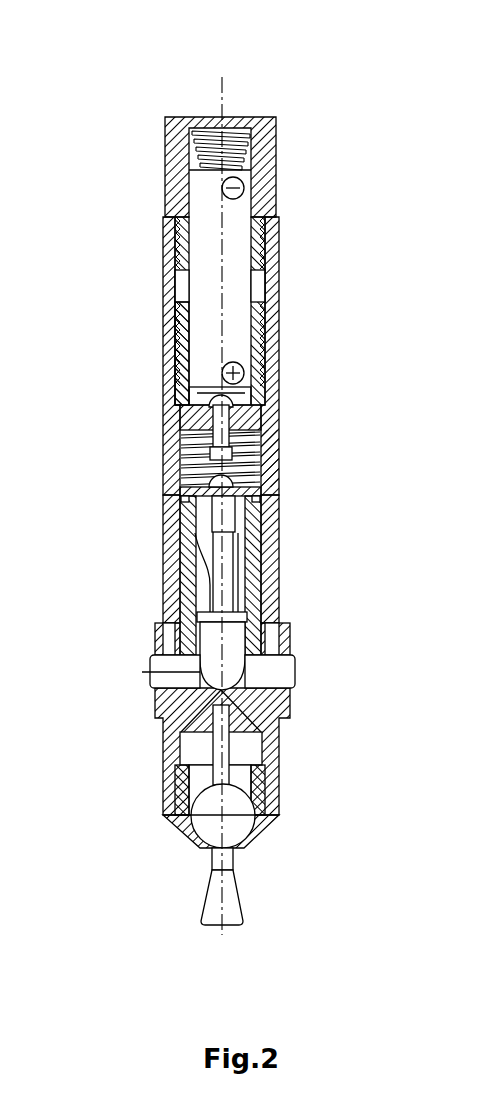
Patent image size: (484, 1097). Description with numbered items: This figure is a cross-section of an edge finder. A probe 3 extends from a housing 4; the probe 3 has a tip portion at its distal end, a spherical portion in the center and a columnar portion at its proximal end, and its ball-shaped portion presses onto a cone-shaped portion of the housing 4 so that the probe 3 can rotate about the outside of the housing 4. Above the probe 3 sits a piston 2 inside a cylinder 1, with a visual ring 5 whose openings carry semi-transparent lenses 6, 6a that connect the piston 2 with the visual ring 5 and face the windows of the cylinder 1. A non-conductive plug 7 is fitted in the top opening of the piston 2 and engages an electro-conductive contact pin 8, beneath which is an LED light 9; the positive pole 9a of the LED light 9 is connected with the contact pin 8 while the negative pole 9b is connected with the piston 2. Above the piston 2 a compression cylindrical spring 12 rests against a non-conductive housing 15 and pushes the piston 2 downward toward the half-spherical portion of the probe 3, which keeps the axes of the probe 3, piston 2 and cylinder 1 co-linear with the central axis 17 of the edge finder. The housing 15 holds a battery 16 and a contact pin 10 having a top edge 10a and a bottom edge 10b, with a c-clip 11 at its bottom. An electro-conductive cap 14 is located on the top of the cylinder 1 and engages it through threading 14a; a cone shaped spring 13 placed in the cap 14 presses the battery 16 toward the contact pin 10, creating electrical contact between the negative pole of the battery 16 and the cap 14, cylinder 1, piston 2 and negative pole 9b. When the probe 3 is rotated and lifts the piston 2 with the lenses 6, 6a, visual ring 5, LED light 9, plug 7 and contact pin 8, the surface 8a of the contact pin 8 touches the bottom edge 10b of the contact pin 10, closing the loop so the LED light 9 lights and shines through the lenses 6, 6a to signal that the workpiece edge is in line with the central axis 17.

The cylinder 1 is at (281, 325).
The piston 2 is at (266, 568).
The probe 3 is at (246, 928).
The housing 4 is at (266, 835).
The visual ring 5 is at (151, 637).
The transparent lens 6 is at (146, 680).
The semi-transparent lens 6a is at (298, 662).
The plug 7 is at (258, 493).
The contact pin 8 is at (208, 530).
The surface of contact pin 8a is at (259, 440).
The LED light 9 is at (249, 628).
The positive pole 9a is at (238, 540).
The negative pole 9b is at (200, 562).
The contact pin 10 is at (241, 400).
The top edge 10a is at (178, 380).
The bottom edge 10b is at (186, 481).
The c-clip 11 is at (194, 449).
The compression cylindrical spring 12 is at (264, 447).
The cone shaped spring 13 is at (249, 150).
The cap 14 is at (274, 188).
The threading 14a is at (178, 285).
The housing 15 is at (180, 413).
The battery 16 is at (254, 283).
The central axis 17 is at (223, 82).